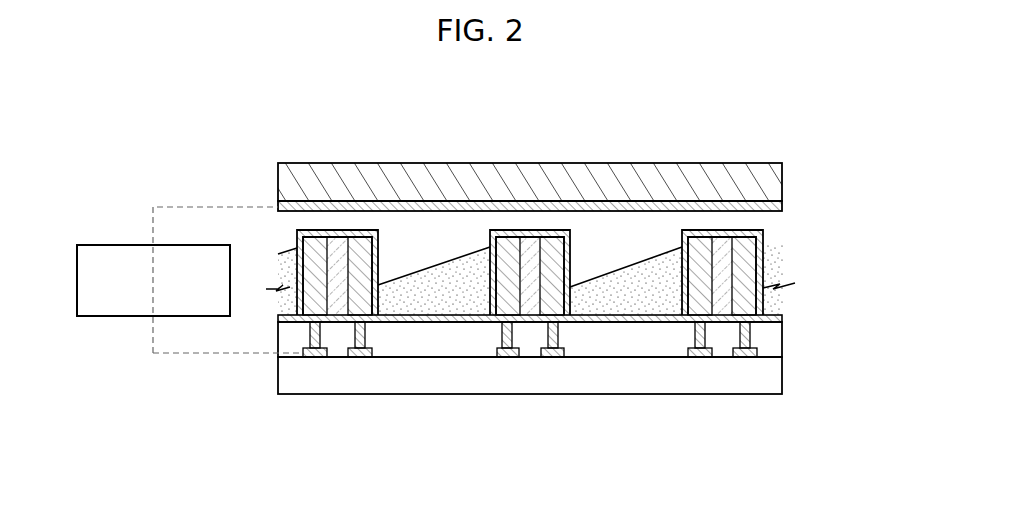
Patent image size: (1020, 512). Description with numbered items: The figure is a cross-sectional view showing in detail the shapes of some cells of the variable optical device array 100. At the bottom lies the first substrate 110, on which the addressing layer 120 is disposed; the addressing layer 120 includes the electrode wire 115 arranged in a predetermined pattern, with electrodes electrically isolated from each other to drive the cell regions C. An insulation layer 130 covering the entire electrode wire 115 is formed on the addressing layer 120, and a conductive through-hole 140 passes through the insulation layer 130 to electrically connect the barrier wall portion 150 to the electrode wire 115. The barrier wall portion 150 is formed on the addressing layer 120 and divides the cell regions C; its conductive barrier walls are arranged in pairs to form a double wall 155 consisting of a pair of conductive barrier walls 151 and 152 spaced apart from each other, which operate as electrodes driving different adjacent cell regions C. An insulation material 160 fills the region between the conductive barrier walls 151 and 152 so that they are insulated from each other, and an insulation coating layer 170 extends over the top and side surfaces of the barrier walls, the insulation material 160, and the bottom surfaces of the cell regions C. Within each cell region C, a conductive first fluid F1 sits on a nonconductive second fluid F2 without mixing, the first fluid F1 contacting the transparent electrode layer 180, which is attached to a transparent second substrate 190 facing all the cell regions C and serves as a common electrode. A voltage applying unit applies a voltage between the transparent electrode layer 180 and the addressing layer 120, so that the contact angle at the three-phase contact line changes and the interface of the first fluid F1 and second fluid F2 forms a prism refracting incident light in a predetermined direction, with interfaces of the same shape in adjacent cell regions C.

The variable optical device array 100 is at (473, 261).
The first substrate 110 is at (783, 375).
The electrode wire 115 is at (507, 354).
The addressing layer 120 is at (526, 362).
The insulation layer 130 is at (783, 340).
The conductive through-hole 140 is at (742, 346).
The barrier wall portion 150 is at (685, 327).
The conductive barrier wall 151 is at (701, 240).
The conductive barrier wall 152 is at (746, 240).
The double wall 155 is at (586, 198).
The insulation material 160 is at (727, 263).
The insulation coating layer 170 is at (763, 303).
The transparent electrode layer 180 is at (783, 204).
The second substrate 190 is at (783, 181).
The cell region C is at (441, 257).
The conductive first fluid F1 is at (611, 244).
The nonconductive second fluid F2 is at (530, 280).